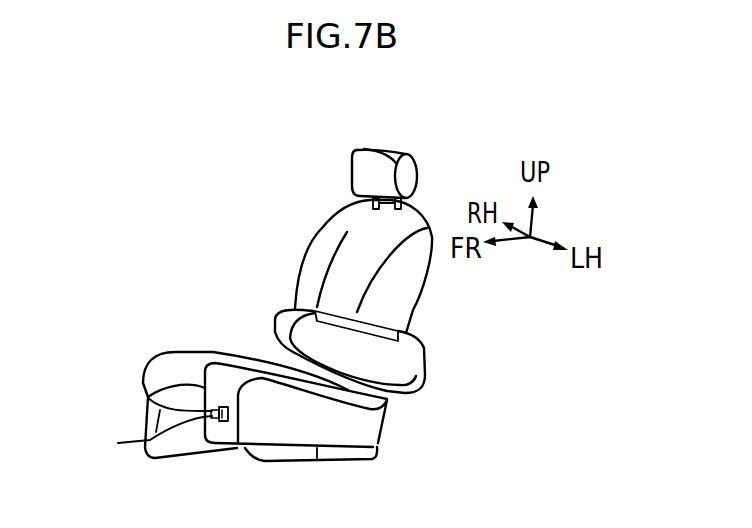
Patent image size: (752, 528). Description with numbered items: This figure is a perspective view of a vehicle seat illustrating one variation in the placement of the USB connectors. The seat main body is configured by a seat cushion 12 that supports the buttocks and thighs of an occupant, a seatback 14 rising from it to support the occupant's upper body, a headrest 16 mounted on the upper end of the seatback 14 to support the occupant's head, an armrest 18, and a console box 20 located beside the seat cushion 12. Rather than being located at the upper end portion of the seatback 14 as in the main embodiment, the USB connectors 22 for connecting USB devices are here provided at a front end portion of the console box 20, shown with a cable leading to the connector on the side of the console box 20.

The seat cushion 12 is at (183, 351).
The seatback 14 is at (421, 210).
The headrest 16 is at (383, 145).
The armrest 18 is at (425, 357).
The console box 20 is at (393, 417).
The USB connectors 22 is at (156, 428).